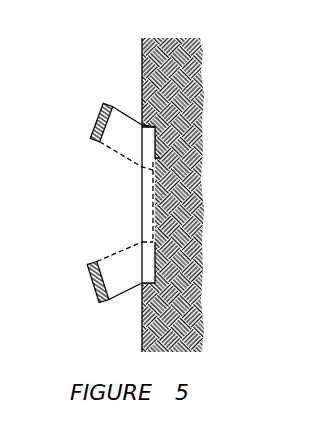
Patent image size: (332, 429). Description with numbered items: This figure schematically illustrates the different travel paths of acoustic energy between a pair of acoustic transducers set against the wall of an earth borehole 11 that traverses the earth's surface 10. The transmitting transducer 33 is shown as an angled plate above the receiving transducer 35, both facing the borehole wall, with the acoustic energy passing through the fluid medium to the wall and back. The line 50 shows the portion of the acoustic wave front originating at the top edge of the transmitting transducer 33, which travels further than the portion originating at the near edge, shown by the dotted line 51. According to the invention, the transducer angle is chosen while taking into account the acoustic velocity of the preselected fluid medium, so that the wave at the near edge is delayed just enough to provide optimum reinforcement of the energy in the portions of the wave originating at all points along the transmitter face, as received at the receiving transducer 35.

The earth's surface 10 is at (203, 83).
The earth borehole 11 is at (73, 46).
The transmitting transducer 33 is at (100, 133).
The receiving transducer 35 is at (95, 287).
The line showing travel path from top edge of transducer 50 is at (160, 150).
The dotted line showing travel path from near edge of transducer 51 is at (160, 158).